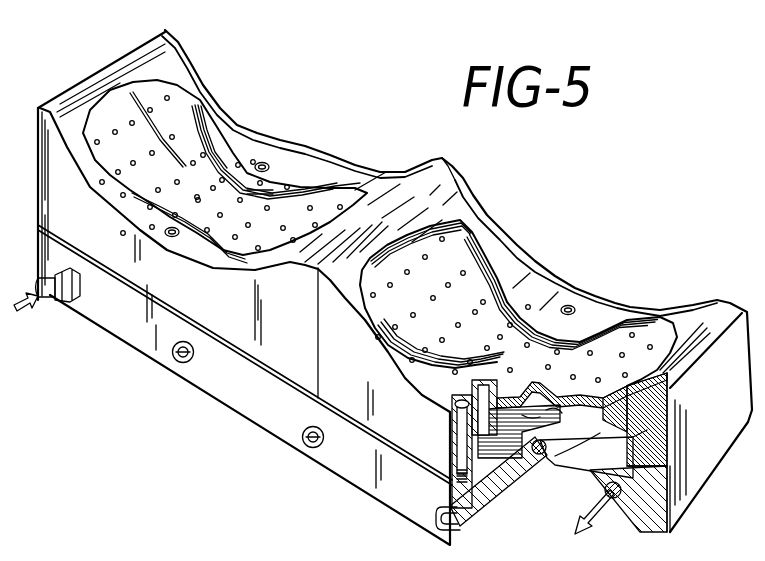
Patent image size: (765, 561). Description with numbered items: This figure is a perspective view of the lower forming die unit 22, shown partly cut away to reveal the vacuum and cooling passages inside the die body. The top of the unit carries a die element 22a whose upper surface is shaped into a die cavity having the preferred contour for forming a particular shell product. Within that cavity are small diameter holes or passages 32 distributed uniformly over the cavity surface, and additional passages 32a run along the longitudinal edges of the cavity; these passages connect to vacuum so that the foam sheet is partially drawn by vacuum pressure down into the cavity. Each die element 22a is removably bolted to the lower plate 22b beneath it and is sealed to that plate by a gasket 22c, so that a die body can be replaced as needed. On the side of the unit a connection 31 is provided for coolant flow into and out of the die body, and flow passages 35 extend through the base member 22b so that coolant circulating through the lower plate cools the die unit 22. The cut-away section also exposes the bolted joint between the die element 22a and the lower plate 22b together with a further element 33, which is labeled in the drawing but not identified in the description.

The lower die unit 22 is at (620, 224).
The die element 22a is at (100, 70).
The lower plate 22b is at (123, 323).
The gasket 22c is at (224, 345).
The connections 31 is at (44, 292).
The passages 32 is at (207, 160).
The passages 32a is at (273, 190).
The end wall section 33 is at (663, 493).
The flow passages 35 is at (593, 503).